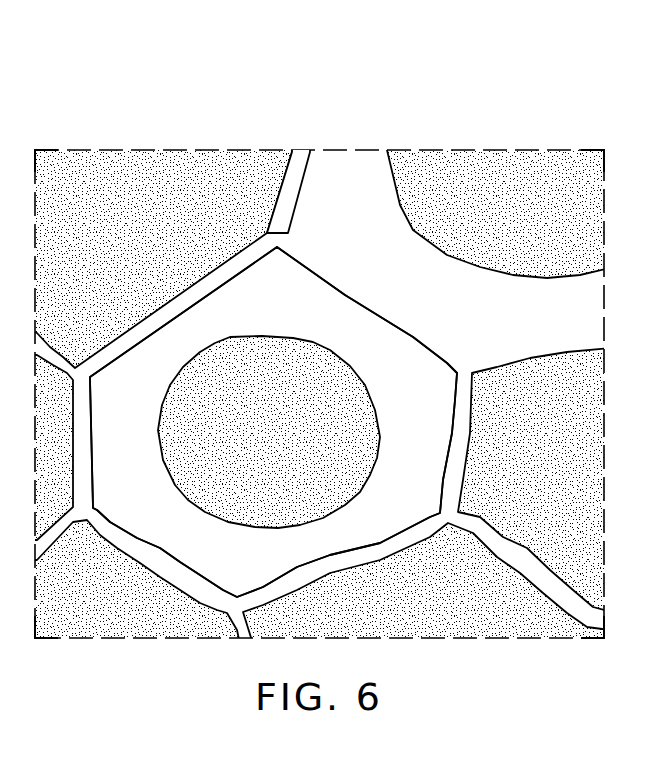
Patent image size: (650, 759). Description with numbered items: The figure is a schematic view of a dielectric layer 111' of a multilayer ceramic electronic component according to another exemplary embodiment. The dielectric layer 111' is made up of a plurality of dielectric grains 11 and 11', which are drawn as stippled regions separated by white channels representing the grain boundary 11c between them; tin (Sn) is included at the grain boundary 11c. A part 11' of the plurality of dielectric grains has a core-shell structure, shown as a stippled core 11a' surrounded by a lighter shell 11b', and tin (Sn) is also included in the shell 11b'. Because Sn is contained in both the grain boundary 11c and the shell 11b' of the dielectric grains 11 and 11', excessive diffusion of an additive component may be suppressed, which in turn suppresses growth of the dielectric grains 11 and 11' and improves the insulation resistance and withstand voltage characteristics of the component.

The dielectric layer 111' is at (319, 331).
The dielectric grain 11 is at (160, 229).
The grain boundary 11c is at (297, 170).
The dielectric grain 11' is at (273, 328).
The core 11a' is at (297, 324).
The shell 11b' is at (273, 358).